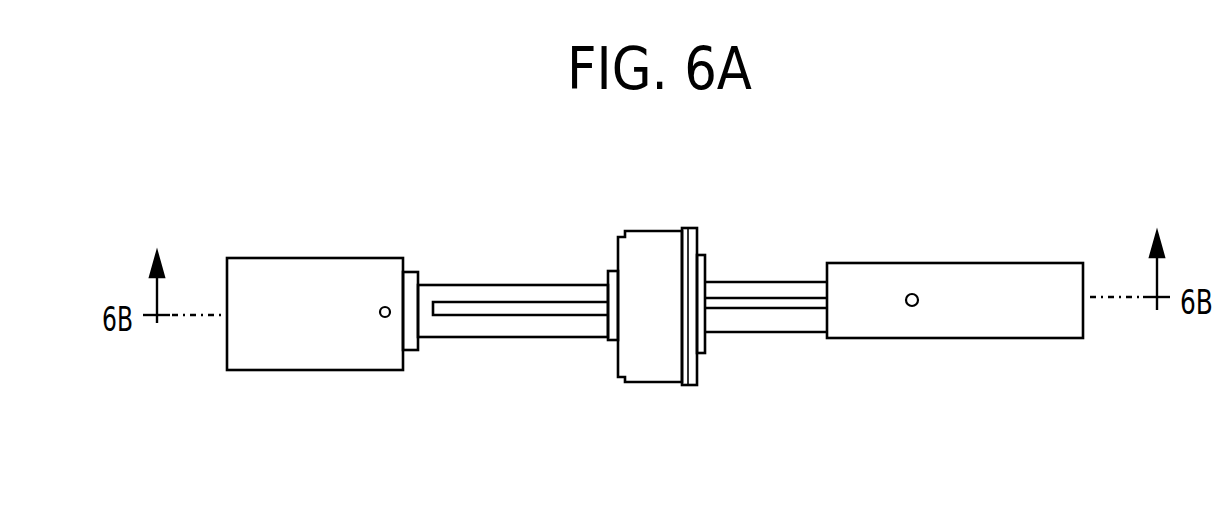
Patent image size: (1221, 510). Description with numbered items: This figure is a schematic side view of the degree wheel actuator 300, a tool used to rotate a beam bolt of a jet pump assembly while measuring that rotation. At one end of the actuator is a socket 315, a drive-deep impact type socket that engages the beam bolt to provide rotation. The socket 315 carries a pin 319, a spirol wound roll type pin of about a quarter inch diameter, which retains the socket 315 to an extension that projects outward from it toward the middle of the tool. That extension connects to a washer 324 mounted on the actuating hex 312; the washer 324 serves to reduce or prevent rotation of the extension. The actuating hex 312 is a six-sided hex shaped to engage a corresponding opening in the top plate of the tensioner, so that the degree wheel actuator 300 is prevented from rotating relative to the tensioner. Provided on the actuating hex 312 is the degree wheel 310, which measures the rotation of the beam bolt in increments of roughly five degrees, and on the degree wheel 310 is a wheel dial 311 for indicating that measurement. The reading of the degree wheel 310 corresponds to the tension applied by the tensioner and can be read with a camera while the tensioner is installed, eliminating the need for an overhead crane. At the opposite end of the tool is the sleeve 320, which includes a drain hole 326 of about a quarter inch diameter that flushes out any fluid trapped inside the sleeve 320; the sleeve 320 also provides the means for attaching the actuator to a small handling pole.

The degree wheel actuator 300 is at (1134, 428).
The degree wheel 310 is at (697, 382).
The wheel dial 311 is at (707, 262).
The actuating hex 312 is at (648, 232).
The socket 315 is at (315, 371).
The pin 319 is at (385, 306).
The sleeve 320 is at (964, 339).
The washer 324 is at (613, 268).
The drain hole 326 is at (916, 295).